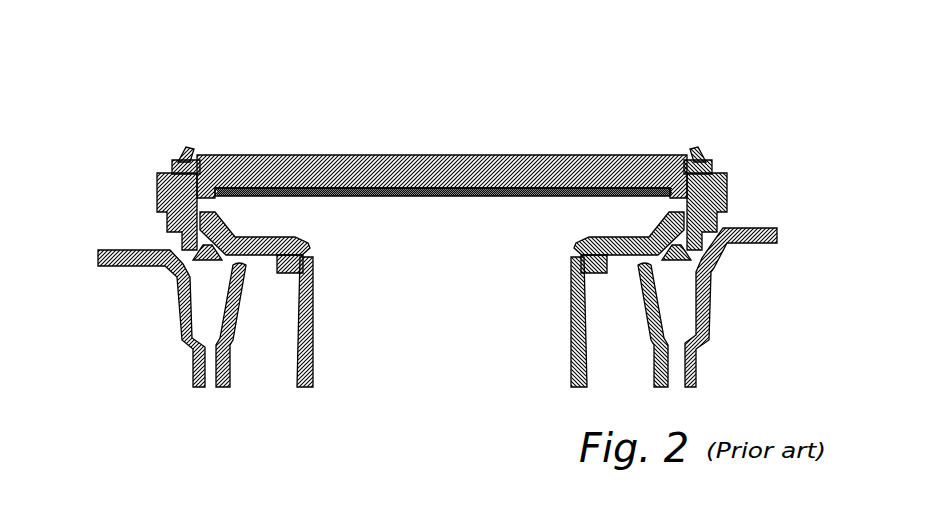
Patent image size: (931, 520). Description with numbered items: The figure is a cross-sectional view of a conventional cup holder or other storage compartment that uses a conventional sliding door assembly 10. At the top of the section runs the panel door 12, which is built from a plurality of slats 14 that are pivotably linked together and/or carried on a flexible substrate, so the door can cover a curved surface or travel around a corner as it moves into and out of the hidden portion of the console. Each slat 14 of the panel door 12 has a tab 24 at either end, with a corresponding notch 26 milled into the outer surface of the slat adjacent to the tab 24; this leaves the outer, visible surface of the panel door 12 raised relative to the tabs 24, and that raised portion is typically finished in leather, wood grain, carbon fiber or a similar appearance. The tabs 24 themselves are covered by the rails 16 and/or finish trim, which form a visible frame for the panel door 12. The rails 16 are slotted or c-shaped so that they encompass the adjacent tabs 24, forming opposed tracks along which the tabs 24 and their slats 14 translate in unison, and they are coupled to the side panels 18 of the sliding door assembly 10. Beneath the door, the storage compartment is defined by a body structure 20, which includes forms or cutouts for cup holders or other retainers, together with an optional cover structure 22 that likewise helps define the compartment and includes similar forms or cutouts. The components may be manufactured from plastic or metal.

The sliding door assembly 10 is at (557, 107).
The panel door 12 is at (643, 155).
The slat 14 is at (465, 267).
The rail 16 is at (730, 183).
The side panel 18 is at (711, 307).
The body structure 20 is at (297, 358).
The cover structure 22 is at (252, 237).
The tab 24 is at (172, 161).
The notch 26 is at (187, 163).